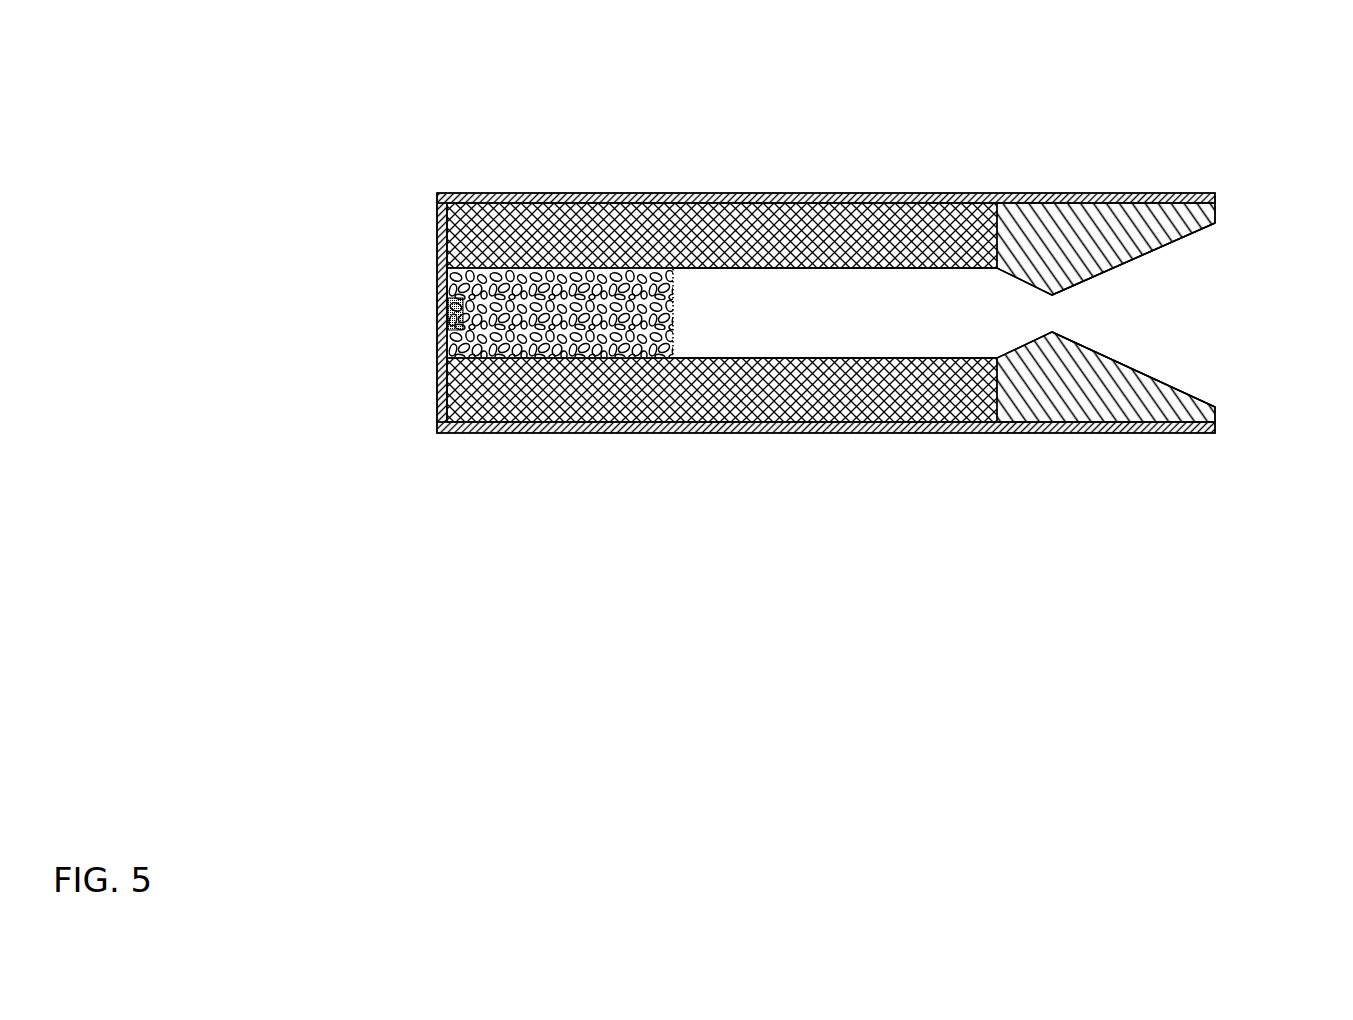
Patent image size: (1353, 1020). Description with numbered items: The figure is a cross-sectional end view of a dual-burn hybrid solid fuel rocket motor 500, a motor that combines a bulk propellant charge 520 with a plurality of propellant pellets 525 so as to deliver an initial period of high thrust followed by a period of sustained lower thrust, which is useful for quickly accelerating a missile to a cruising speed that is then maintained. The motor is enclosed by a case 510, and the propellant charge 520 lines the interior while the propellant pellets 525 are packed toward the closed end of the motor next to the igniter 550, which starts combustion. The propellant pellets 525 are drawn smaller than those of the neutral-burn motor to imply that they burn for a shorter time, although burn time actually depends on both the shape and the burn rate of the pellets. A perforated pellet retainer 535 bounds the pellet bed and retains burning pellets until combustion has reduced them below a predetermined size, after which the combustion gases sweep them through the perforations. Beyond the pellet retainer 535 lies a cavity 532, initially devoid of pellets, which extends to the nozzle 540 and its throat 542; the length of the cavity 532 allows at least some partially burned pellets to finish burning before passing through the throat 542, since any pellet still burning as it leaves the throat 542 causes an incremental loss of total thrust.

The solid fuel rocket motor 500 is at (585, 114).
The case 510 is at (1057, 193).
The propellant charge 520 is at (783, 192).
The propellant pellets 525 is at (573, 353).
The cavity 532 is at (828, 320).
The pellet retainer 535 is at (673, 318).
The nozzle 540 is at (1157, 250).
The throat 542 is at (1052, 332).
The igniter 550 is at (437, 314).